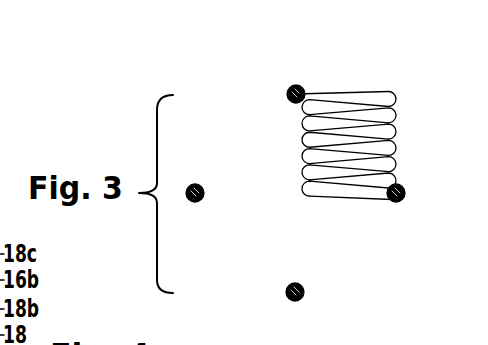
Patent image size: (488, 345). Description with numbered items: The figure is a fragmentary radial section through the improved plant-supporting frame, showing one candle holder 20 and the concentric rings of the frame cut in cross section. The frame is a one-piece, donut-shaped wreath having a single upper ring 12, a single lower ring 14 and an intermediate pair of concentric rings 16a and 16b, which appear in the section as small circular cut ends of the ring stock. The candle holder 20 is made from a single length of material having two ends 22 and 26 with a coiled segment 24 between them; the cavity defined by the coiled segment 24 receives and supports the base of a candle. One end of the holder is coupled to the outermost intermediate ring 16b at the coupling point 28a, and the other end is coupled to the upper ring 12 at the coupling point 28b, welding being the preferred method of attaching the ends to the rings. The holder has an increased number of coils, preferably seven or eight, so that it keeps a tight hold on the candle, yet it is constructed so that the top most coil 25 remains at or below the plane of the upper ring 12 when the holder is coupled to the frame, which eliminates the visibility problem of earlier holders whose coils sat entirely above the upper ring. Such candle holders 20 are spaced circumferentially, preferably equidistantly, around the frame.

The upper ring 12 is at (291, 104).
The lower ring 14 is at (304, 290).
The intermediate ring 16a is at (192, 203).
The outermost intermediate ring 16b is at (404, 189).
The candle holder 20 is at (303, 146).
The end 22 is at (318, 88).
The coiled segment 24 is at (398, 136).
The top most coil 25 is at (393, 98).
The end 26 is at (356, 201).
The coupling point 28a is at (395, 203).
The coupling point 28b is at (293, 84).